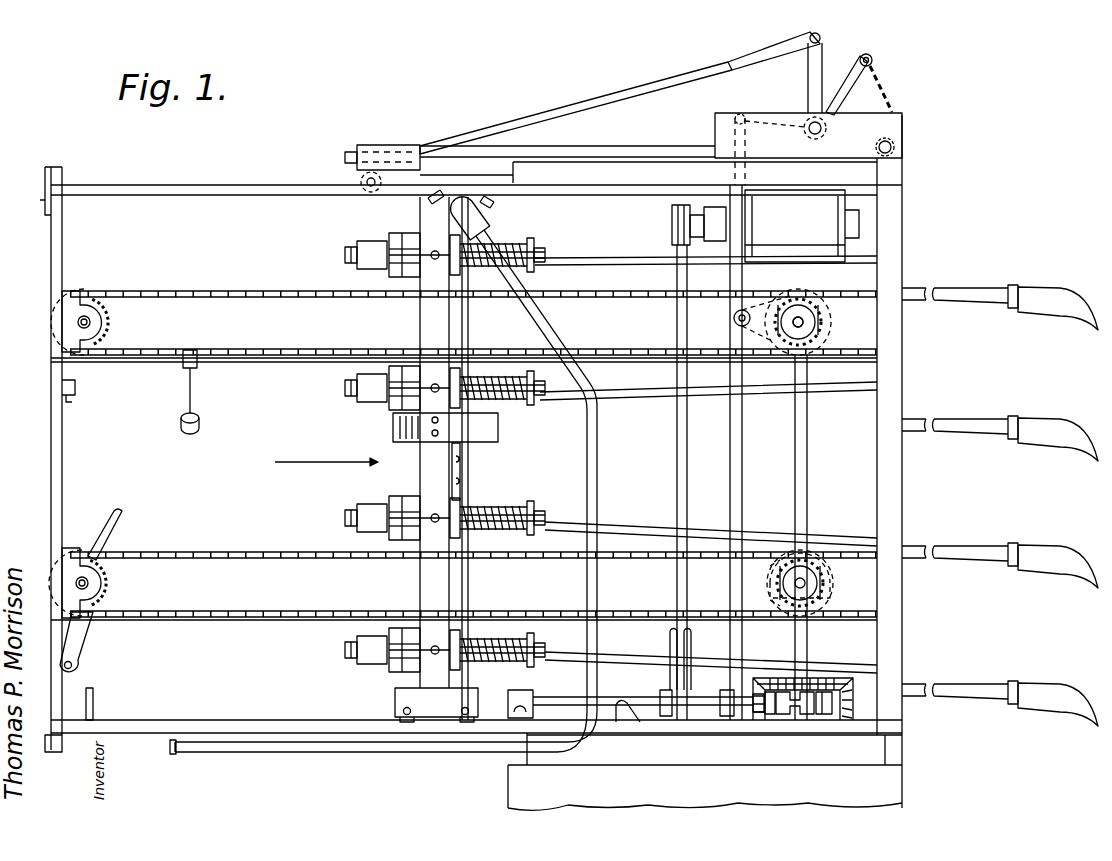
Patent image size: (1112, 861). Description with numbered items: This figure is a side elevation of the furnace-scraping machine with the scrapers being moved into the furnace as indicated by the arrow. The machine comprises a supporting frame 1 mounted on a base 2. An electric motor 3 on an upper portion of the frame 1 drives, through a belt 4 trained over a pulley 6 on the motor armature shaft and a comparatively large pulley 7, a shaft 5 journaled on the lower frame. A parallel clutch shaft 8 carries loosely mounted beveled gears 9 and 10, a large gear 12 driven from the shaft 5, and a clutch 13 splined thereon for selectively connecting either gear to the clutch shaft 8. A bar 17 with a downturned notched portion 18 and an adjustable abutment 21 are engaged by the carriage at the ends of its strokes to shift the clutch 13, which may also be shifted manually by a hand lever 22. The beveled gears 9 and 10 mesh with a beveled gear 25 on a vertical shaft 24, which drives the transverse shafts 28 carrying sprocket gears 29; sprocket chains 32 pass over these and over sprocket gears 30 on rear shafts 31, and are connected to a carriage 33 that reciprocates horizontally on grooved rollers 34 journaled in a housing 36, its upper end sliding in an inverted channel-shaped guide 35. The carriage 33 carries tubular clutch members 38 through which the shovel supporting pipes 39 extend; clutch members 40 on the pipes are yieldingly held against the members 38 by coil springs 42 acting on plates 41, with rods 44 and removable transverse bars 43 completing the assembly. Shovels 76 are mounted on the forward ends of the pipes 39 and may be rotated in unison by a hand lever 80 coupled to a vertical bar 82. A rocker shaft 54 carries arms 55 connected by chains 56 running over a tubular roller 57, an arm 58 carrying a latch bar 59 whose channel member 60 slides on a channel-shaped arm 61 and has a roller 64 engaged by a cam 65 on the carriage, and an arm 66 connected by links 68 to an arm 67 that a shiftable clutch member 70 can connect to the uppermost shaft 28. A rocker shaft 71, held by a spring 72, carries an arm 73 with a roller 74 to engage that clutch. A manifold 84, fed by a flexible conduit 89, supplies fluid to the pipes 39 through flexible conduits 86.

The frame 1 is at (904, 222).
The base 2 is at (514, 787).
The electric motor 3 is at (822, 200).
The belt 4 is at (689, 487).
The shaft 5 is at (561, 708).
The pulley 6 is at (671, 212).
The large pulley 7 is at (668, 632).
The clutch shaft 8 is at (795, 714).
The beveled gear 9 is at (770, 714).
The beveled gear 10 is at (852, 682).
The large gear 12 is at (758, 712).
The clutch 13 is at (824, 714).
The bar 17 is at (708, 718).
The downturned notched portion 18 is at (620, 728).
The abutment 21 is at (96, 697).
The hand lever 22 is at (85, 637).
The shaft 24 is at (808, 480).
The beveled gear 25 is at (812, 682).
The transverse shafts 28 is at (800, 326).
The sprocket gears 29 is at (740, 330).
The sprocket gears 30 is at (105, 318).
The shafts 31 is at (78, 322).
The sprocket chains 32 is at (210, 291).
The carriage 33 is at (410, 466).
The grooved rollers 34 is at (410, 718).
The inverted channel-shaped guide 35 is at (196, 188).
The housing 36 is at (396, 690).
The clutch members 38 is at (410, 272).
The shovel supporting pipes 39 is at (578, 268).
The clutch members 40 is at (398, 264).
The plates 41 is at (531, 236).
The coil springs 42 is at (536, 276).
The transverse bars 43 is at (392, 234).
The rods 44 is at (482, 272).
The rocker shaft 54 is at (822, 128).
The arms 55 is at (856, 72).
The chains 56 is at (880, 82).
The tubular roller 57 is at (895, 147).
The arm 58 is at (806, 70).
The latch bar 59 is at (546, 116).
The channel shaped member 60 is at (370, 144).
The channel-shaped arm 61 is at (550, 132).
The roller 64 is at (360, 180).
The cam 65 is at (426, 202).
The arm 66 is at (774, 120).
The arm 67 is at (735, 314).
The links 68 is at (752, 215).
The shiftable clutch member 70 is at (826, 306).
The rocker shaft 71 is at (246, 362).
The spring 72 is at (72, 400).
The arm 73 is at (183, 383).
The roller 74 is at (182, 426).
The shovels 76 is at (1052, 300).
The hand lever 80 is at (470, 468).
The vertical bar 82 is at (470, 568).
The manifold 84 is at (472, 214).
The flexible conduits 86 is at (344, 252).
The flexible conduit 89 is at (560, 326).